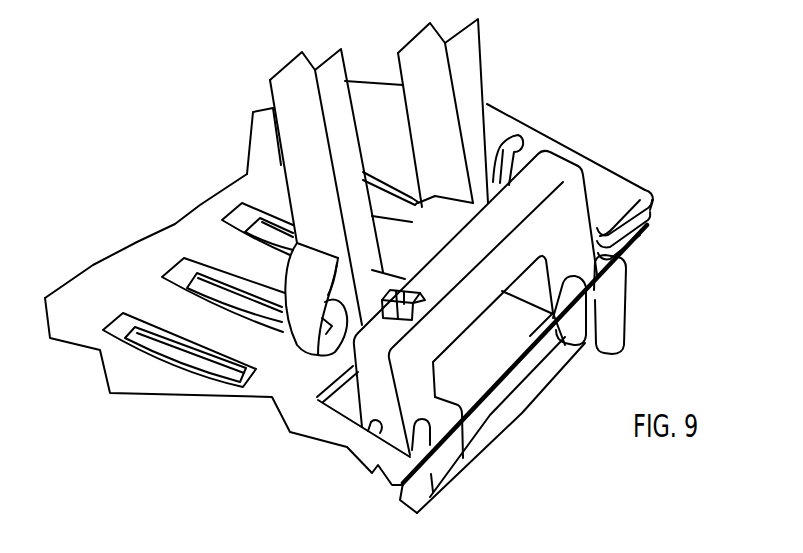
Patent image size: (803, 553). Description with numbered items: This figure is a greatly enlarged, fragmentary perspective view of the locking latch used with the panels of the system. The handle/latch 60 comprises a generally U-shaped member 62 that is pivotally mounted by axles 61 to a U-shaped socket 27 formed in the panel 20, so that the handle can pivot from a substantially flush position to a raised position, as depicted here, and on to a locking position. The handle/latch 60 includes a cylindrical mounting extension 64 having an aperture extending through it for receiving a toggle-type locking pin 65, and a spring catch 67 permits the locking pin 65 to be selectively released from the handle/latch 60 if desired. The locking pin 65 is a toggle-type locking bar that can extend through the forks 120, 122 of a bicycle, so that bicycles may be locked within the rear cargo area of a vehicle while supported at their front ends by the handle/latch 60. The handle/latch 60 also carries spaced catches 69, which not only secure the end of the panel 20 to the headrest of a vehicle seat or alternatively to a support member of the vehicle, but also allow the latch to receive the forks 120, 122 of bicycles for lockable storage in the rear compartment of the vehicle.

The panel 20 is at (131, 258).
The U-shaped socket 27 is at (338, 420).
The handle/latch 60 is at (562, 147).
The axle 61 is at (370, 420).
The U-shaped member 62 is at (590, 190).
The cylindrical mounting extension 64 is at (387, 220).
The toggle-type locking pin 65 is at (298, 332).
The spring catch 67 is at (400, 289).
The spaced catches 69 is at (583, 292).
The fork 120 is at (284, 116).
The fork 122 is at (415, 87).